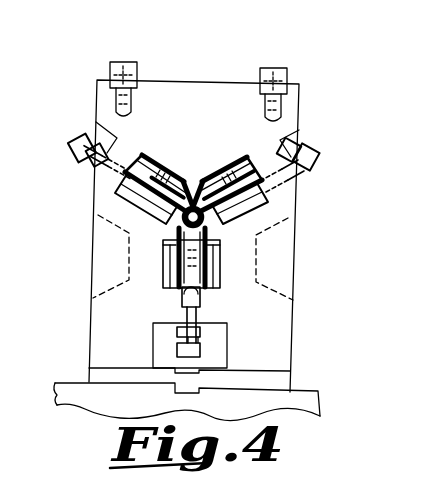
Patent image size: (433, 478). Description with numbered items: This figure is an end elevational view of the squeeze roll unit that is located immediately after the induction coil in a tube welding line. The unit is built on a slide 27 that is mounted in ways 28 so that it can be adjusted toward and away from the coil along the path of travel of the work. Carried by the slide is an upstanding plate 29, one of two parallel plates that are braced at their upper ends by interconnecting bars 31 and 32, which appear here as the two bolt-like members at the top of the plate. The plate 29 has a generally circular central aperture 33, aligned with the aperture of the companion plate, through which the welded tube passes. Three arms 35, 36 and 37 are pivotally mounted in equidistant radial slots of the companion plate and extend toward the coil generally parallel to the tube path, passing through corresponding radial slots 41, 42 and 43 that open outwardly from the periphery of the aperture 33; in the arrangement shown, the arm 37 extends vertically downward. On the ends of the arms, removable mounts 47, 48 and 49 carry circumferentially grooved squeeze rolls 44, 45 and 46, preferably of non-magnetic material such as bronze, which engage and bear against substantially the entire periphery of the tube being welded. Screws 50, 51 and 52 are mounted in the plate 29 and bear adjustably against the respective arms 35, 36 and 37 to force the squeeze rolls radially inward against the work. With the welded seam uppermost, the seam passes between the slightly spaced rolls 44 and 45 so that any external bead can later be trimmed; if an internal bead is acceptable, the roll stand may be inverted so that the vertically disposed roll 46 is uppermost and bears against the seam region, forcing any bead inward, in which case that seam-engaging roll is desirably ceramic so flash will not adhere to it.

The slide 27 is at (277, 382).
The ways 28 is at (308, 407).
The upstanding plate 29 is at (300, 98).
The bar 31 is at (121, 61).
The bar 32 is at (272, 67).
The central aperture 33 is at (199, 176).
The arm 35 is at (127, 168).
The arm 36 is at (270, 200).
The arm 37 is at (200, 303).
The radial slot 41 is at (138, 183).
The radial slot 42 is at (300, 183).
The radial slot 43 is at (182, 303).
The squeeze roll 44 is at (133, 201).
The squeeze roll 45 is at (266, 222).
The squeeze roll 46 is at (220, 270).
The removable mount 47 is at (162, 158).
The removable mount 48 is at (232, 157).
The removable mount 49 is at (163, 268).
The screw 50 is at (72, 148).
The screw 51 is at (305, 143).
The screw 52 is at (178, 351).